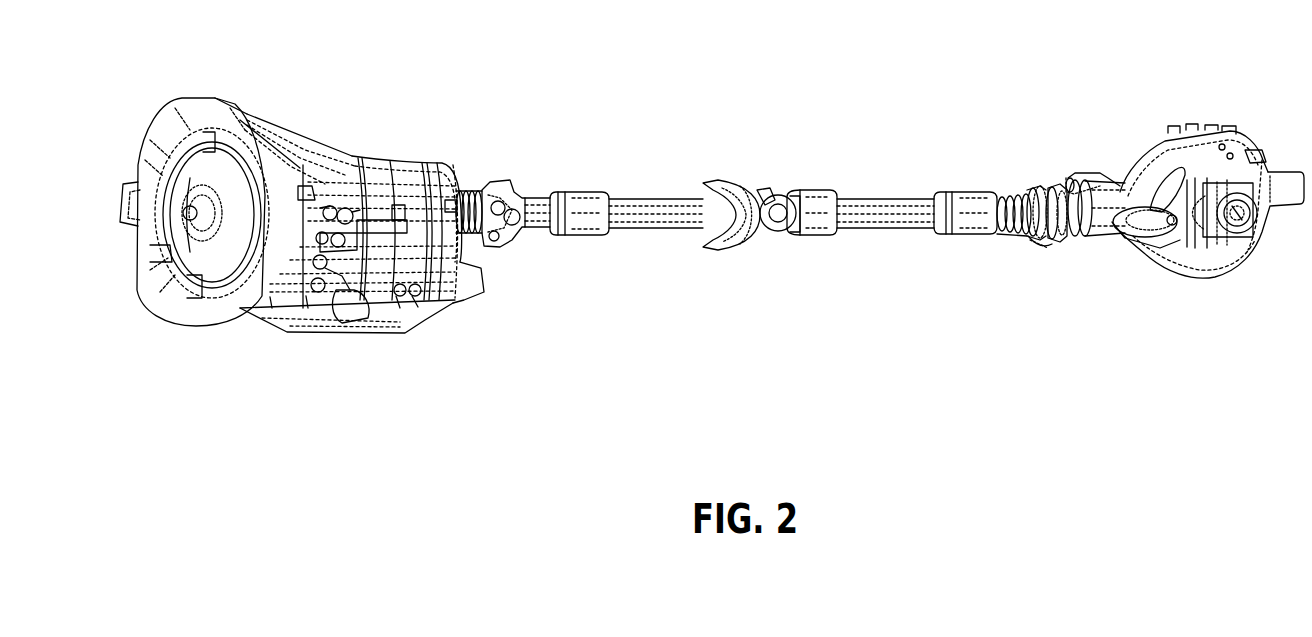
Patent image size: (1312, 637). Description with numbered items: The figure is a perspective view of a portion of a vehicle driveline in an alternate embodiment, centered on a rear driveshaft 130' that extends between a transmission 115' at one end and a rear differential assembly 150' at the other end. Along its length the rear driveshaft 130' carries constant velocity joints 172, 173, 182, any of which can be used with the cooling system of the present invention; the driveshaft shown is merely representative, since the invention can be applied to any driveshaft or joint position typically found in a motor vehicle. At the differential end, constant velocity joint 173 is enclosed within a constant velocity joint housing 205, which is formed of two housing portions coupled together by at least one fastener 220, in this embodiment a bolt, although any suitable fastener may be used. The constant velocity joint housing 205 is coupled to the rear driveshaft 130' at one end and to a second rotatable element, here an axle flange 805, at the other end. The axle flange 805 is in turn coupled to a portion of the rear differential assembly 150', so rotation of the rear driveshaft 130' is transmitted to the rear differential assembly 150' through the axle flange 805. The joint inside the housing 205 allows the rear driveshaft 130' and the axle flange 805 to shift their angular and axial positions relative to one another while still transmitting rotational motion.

The transmission 115' is at (302, 191).
The rear driveshaft 130' is at (778, 137).
The rear differential assembly 150' is at (1185, 152).
The constant velocity joint 172 is at (488, 241).
The constant velocity joint 182 is at (740, 246).
The constant velocity joint housing 205 is at (1005, 244).
The fastener 220 is at (1030, 190).
The axle flange 805 is at (1057, 187).
The constant velocity joint 173 is at (1047, 243).